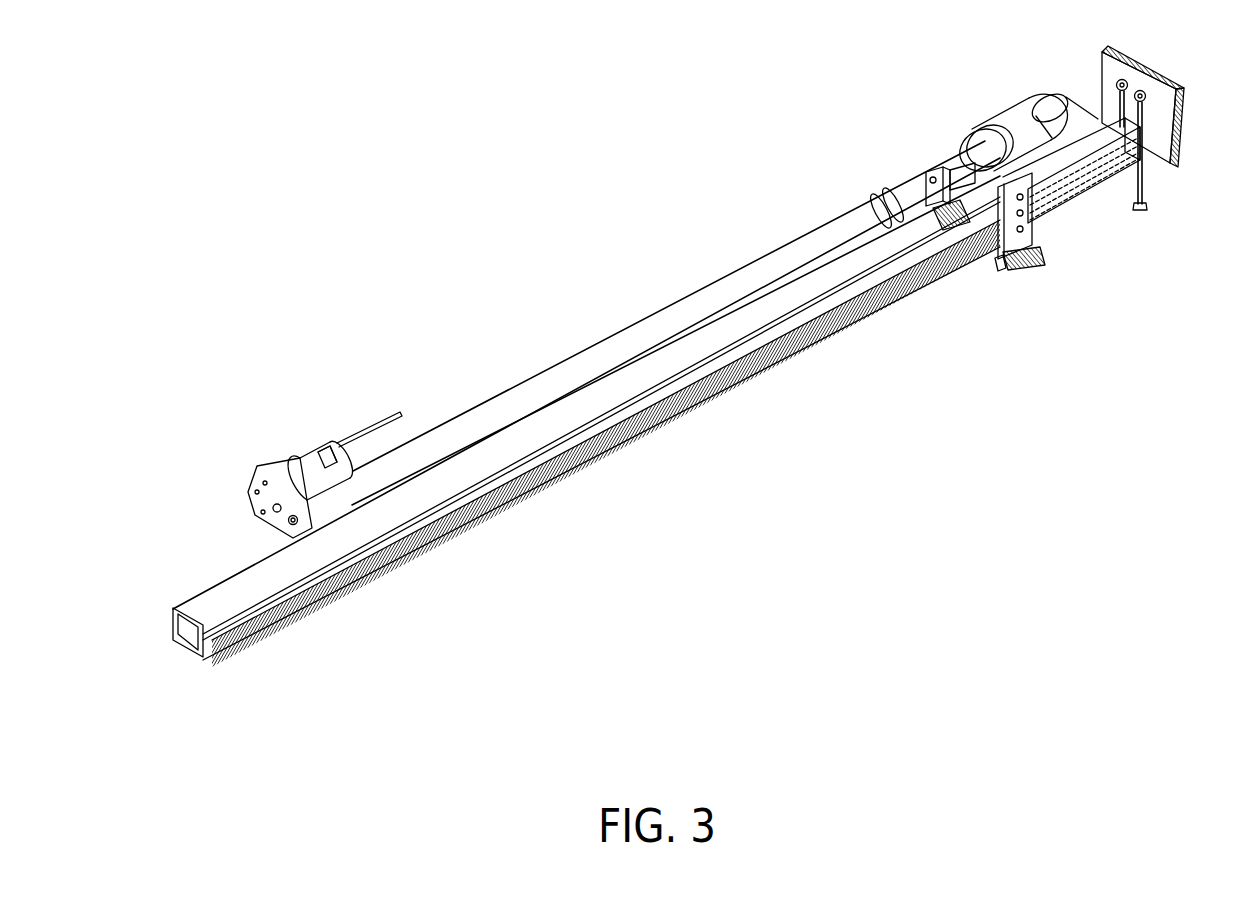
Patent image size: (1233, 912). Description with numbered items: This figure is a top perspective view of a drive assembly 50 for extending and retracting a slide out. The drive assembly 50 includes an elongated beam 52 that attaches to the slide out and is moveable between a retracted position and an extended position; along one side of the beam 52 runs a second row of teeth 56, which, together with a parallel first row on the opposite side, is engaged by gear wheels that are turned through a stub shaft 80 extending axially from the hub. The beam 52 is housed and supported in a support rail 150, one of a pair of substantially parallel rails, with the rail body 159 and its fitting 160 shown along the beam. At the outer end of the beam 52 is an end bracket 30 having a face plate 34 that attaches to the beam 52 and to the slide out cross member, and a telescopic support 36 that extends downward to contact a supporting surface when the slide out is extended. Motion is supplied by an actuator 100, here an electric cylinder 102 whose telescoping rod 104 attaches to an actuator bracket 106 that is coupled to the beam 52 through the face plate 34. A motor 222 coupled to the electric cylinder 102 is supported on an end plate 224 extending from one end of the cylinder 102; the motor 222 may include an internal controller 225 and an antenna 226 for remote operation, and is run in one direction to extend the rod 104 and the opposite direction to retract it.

The end bracket 30 is at (1159, 107).
The face plate 34 is at (1185, 137).
The support 36 is at (1143, 192).
The drive assembly 50 is at (584, 412).
The beam 52 is at (1100, 200).
The second row of teeth 56 is at (1067, 205).
The stub shaft 80 is at (1022, 258).
The actuator 100 is at (635, 289).
The electric cylinder 102 is at (729, 270).
The telescoping rod 104 is at (997, 125).
The actuator bracket 106 is at (1055, 97).
The support rail 150 is at (596, 430).
The channel 159 is at (212, 595).
The bracket 160 is at (910, 192).
The motor 222 is at (310, 450).
The end plate 224 is at (242, 492).
The internal controller 225 is at (327, 432).
The antenna 226 is at (364, 415).